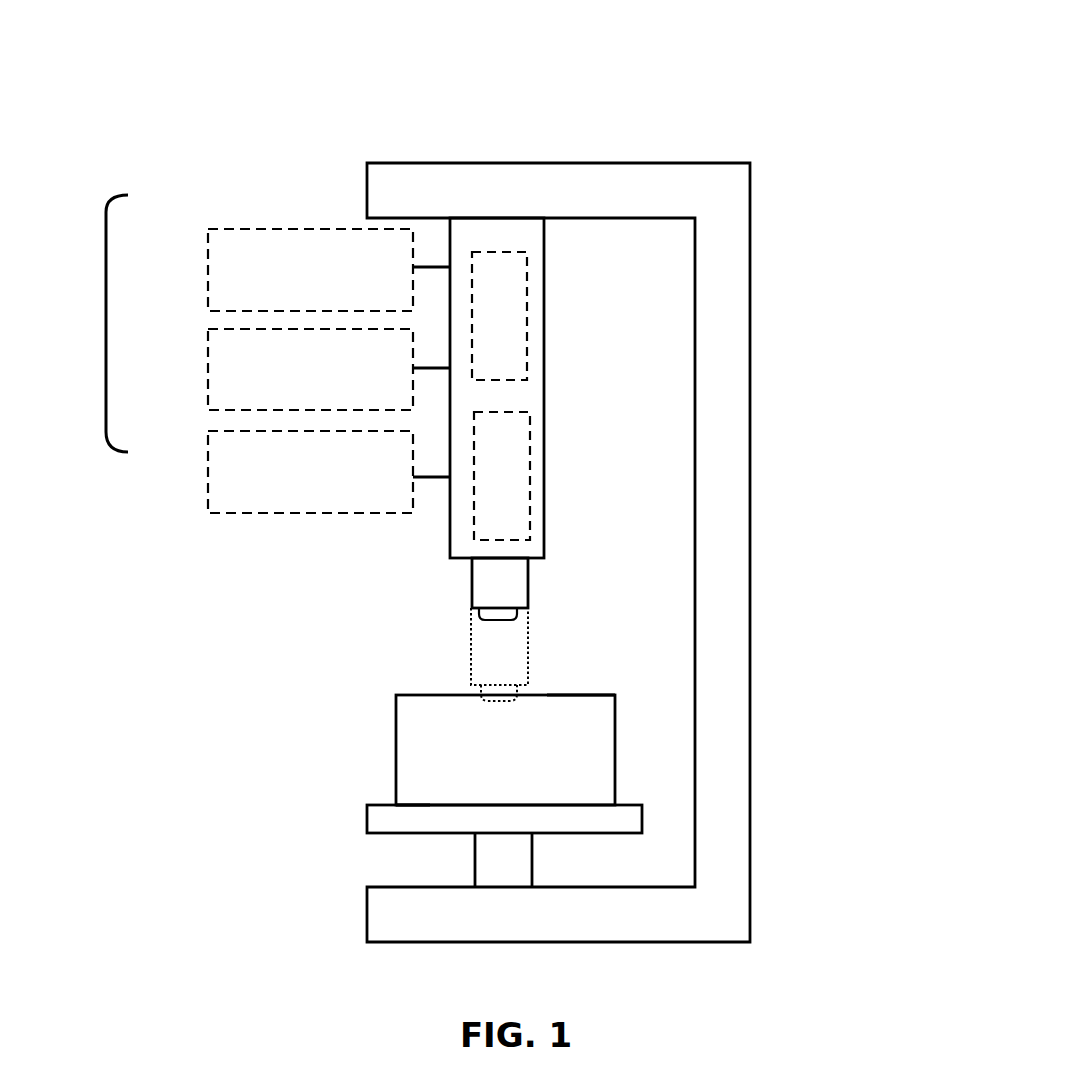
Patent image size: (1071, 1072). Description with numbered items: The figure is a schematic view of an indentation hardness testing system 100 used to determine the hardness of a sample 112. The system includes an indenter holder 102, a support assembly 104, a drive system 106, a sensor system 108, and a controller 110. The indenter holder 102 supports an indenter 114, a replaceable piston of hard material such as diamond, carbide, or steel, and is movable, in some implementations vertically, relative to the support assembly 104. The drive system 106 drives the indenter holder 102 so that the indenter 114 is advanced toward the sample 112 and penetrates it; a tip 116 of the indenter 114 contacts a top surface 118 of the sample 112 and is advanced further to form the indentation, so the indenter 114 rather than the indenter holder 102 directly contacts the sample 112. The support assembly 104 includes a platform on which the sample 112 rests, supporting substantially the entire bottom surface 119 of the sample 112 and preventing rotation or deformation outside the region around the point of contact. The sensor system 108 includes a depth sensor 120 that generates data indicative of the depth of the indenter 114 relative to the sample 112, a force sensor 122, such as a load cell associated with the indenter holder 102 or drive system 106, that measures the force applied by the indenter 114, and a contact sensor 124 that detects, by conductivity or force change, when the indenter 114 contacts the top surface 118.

The indentation hardness testing system 100 is at (808, 163).
The indenter holder 102 is at (500, 583).
The support assembly 104 is at (367, 830).
The drive system 106 is at (502, 476).
The sensor system 108 is at (242, 354).
The controller 110 is at (499, 316).
The sample 112 is at (505, 750).
The indenter 114 is at (502, 612).
The tip 116 is at (486, 621).
The top surface 118 is at (547, 696).
The bottom surface 119 is at (425, 805).
The depth sensor 120 is at (233, 401).
The force sensor 122 is at (233, 474).
The contact sensor 124 is at (233, 281).